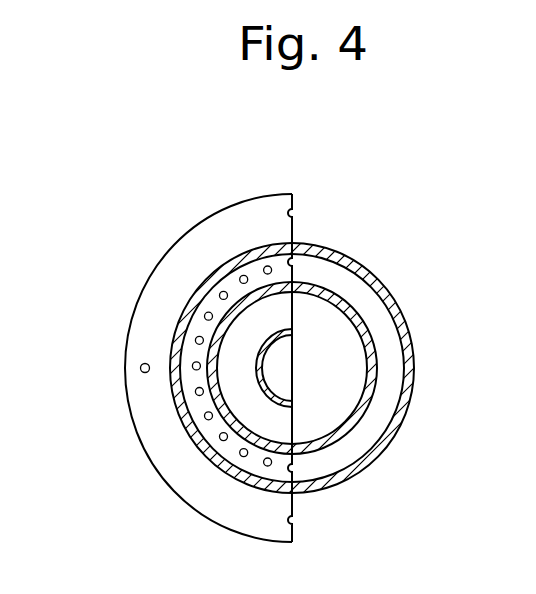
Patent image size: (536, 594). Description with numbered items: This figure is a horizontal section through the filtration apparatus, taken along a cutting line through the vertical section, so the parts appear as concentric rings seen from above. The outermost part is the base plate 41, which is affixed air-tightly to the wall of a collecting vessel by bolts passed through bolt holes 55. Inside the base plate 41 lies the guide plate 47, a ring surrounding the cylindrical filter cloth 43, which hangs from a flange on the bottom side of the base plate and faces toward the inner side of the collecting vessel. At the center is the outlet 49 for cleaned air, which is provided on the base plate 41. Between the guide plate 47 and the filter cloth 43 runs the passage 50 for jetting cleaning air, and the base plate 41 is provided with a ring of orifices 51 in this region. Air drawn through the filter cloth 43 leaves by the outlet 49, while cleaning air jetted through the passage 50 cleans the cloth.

The base plate 41 is at (130, 310).
The cylindrical filter cloth 43 is at (378, 375).
The guide plate 47 is at (408, 410).
The outlet 49 is at (283, 407).
The passage 50 is at (222, 312).
The orifices 51 is at (195, 396).
The bolt holes 55 is at (140, 368).